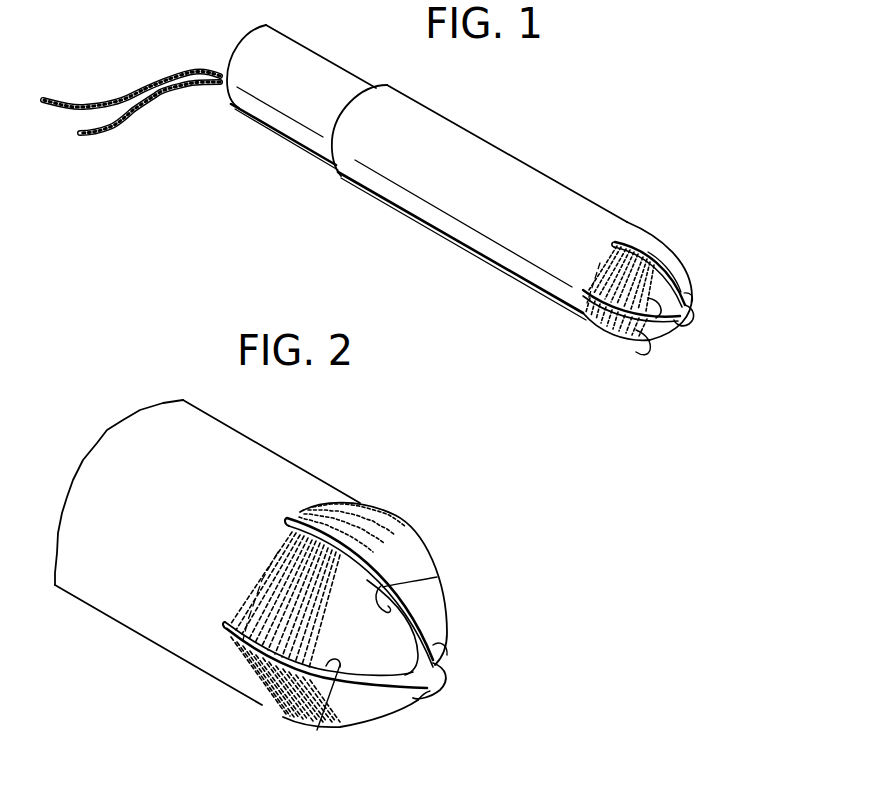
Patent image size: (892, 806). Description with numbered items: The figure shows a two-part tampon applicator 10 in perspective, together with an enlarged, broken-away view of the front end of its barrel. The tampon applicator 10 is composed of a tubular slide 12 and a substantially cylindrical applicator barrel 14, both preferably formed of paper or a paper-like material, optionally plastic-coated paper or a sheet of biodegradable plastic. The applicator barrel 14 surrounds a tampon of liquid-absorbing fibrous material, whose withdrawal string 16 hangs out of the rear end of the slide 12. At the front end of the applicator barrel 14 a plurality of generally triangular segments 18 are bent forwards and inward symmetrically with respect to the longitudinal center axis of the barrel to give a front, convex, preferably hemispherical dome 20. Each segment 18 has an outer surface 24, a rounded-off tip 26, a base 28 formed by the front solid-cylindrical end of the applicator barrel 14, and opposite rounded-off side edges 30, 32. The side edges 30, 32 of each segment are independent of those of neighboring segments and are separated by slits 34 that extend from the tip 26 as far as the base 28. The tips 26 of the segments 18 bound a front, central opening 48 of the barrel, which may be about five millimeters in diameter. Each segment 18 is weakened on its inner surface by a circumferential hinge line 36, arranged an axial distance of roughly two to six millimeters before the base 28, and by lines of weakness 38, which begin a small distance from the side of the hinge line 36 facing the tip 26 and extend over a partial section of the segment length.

In FIG. 1, the tampon applicator 10 is at (528, 133).
In FIG. 1, the slide 12 is at (325, 68).
In FIG. 1, the applicator barrel 14 is at (368, 178).
In FIG. 2, the applicator barrel 14 is at (100, 582).
In FIG. 1, the withdrawal string 16 is at (108, 100).
In FIG. 1, the segments 18 is at (645, 332).
In FIG. 2, the segments 18 is at (443, 587).
In FIG. 1, the dome 20 is at (712, 317).
In FIG. 1, the outer surface 24 is at (683, 286).
In FIG. 2, the outer surface 24 is at (430, 628).
In FIG. 2, the tip 26 is at (445, 680).
In FIG. 2, the base 28 is at (268, 555).
In FIG. 2, the side edge 30 is at (318, 727).
In FIG. 2, the side edge 32 is at (438, 562).
In FIG. 2, the slits 34 is at (300, 520).
In FIG. 1, the hinge line 36 is at (630, 236).
In FIG. 2, the hinge line 36 is at (247, 664).
In FIG. 1, the lines of weakness 38 is at (655, 240).
In FIG. 2, the lines of weakness 38 is at (272, 728).
In FIG. 2, the central opening 48 is at (450, 698).